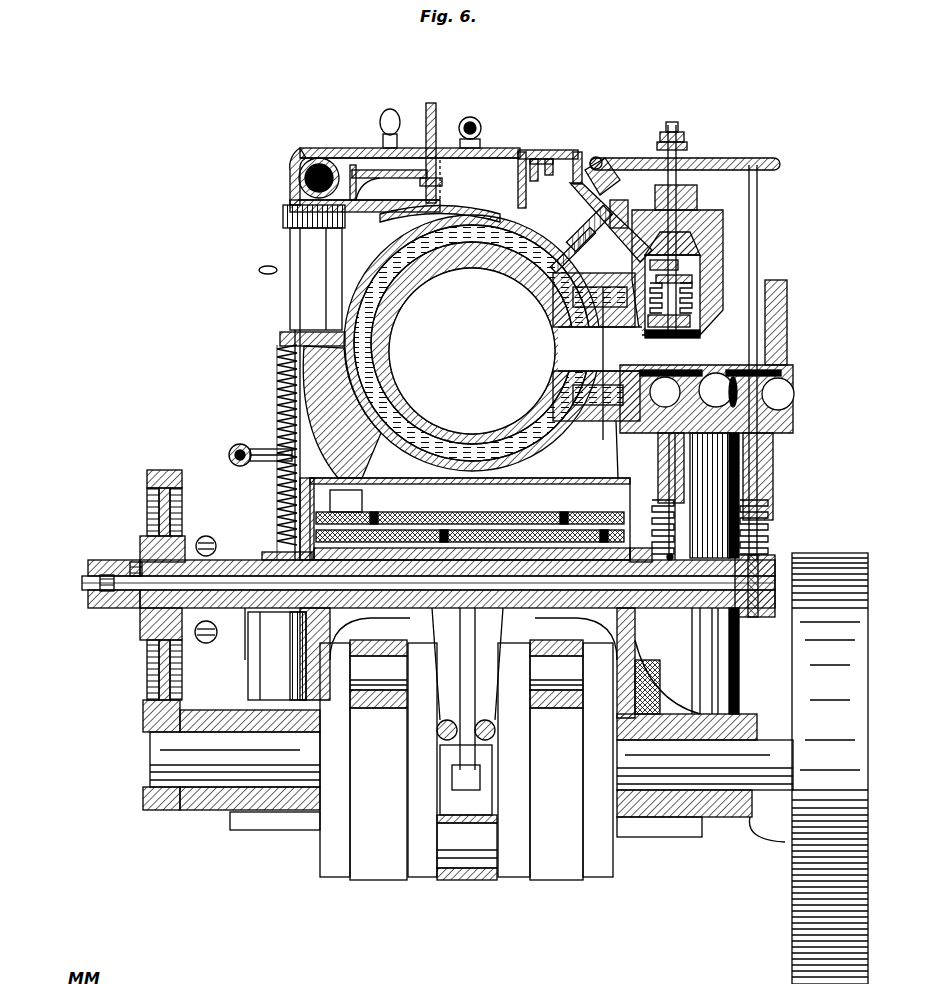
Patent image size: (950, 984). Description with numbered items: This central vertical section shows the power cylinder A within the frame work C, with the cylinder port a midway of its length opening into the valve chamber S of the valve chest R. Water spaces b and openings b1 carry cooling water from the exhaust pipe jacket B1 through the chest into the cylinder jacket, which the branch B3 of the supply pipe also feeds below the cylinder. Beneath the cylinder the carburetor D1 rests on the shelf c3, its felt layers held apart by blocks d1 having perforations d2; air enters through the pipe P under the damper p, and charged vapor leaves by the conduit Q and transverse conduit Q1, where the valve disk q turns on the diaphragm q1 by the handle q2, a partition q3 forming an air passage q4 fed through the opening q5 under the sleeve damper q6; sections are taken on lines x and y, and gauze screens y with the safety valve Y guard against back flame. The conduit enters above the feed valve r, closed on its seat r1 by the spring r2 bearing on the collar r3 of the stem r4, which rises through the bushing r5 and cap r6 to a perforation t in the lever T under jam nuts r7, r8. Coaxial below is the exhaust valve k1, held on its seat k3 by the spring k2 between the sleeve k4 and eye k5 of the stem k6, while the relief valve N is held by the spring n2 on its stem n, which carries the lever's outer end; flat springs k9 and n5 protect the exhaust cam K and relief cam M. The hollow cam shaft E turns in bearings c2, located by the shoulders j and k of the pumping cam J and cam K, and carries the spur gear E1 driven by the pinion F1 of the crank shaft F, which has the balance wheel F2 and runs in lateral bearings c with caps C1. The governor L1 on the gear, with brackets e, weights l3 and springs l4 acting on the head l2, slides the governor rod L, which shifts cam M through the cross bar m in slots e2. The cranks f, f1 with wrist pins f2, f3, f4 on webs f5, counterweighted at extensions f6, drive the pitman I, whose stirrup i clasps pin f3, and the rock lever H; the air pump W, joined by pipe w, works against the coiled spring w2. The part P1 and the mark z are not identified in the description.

The power cylinder A is at (472, 343).
The cylinder port a is at (600, 349).
The valve chamber S is at (613, 363).
The water space b is at (596, 356).
The openings into water jacket b1 is at (594, 300).
The vapor conduit Q is at (405, 180).
The transverse conduit Q1 is at (519, 150).
The valve disk q is at (325, 178).
The diaphragm q1 is at (426, 160).
The handle q2 is at (437, 125).
The partition q3 is at (440, 225).
The air passage q4 is at (388, 182).
The air opening q5 is at (388, 212).
The sleeve damper q6 is at (382, 118).
The section line x x is at (430, 160).
The gauze screens y is at (529, 195).
The opening z is at (452, 215).
The safety valve Y is at (544, 161).
The lever T is at (682, 166).
The perforation t is at (690, 146).
The feed valve r is at (672, 324).
The valve seat r1 is at (598, 157).
The spring r2 is at (700, 300).
The collar r3 is at (681, 261).
The valve stem r4 is at (678, 178).
The bushing r5 is at (665, 232).
The cap r6 is at (677, 259).
The jam nut r7 is at (668, 127).
The jam nut r8 is at (680, 130).
The relief valve stem n is at (786, 475).
The spiral spring n2 is at (766, 527).
The flat spring n5 is at (770, 555).
The relief valve N is at (786, 322).
The valve chest R is at (715, 399).
The shoulder of exhaust cam k is at (636, 560).
The exhaust valve k1 is at (671, 355).
The spiral spring k2 is at (676, 527).
The exhaust valve seat k3 is at (749, 355).
The sleeve k4 is at (688, 496).
The eye k5 is at (675, 557).
The exhaust valve stem k6 is at (658, 455).
The flat spring k9 is at (655, 560).
The damper p is at (302, 267).
The air pipe P is at (330, 405).
The piston block P1 is at (346, 501).
The pipe w is at (272, 560).
The coiled spring w2 is at (273, 452).
The water supply branch B3 is at (249, 452).
The pumping cam J is at (262, 560).
The cam shaft E is at (527, 608).
The spur gear E1 is at (152, 585).
The governor rod L is at (82, 590).
The governor L1 is at (206, 533).
The head or socket piece l2 is at (90, 575).
The centrifugal weights l3 is at (212, 675).
The springs l4 is at (214, 543).
The brackets e is at (120, 625).
The longitudinal slots e2 is at (775, 572).
The relief valve cam M is at (780, 574).
The carburetor D1 is at (465, 519).
The blocks d1 is at (472, 535).
The perforations d2 is at (430, 520).
The shelf c3 is at (530, 552).
The frame work C is at (589, 451).
The lateral bearings c is at (450, 716).
The cam shaft bearings c2 is at (467, 663).
The caps C1 is at (492, 826).
The crank shaft F is at (471, 761).
The pinion F1 is at (445, 816).
The balance wheel F2 is at (830, 768).
The central crank f is at (459, 914).
The outer crank f1 is at (466, 794).
The wrist pin f2 is at (378, 674).
The central wrist pin f3 is at (467, 847).
The wrist pin f4 is at (556, 674).
The crank webs f5 is at (466, 760).
The web extensions f6 is at (463, 844).
The rock lever H is at (467, 689).
The pitman I is at (466, 767).
The stirrup i is at (440, 882).
The exhaust cam K is at (668, 612).
The exhaust pipe jacket B1 is at (714, 661).
The cross bar m is at (745, 620).
The shoulder of pumping cam j is at (300, 612).
The air pump W is at (277, 656).